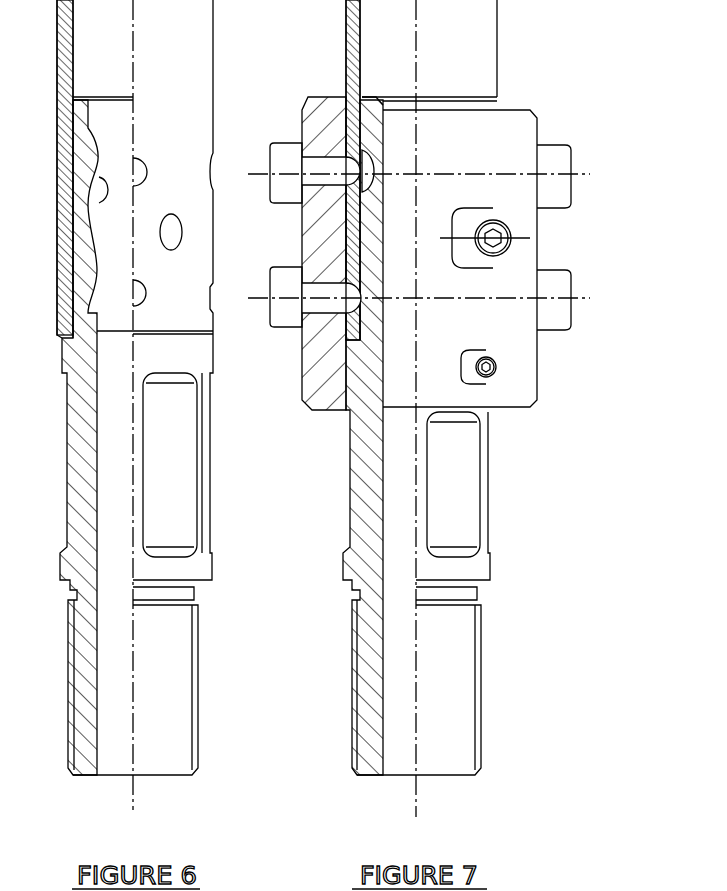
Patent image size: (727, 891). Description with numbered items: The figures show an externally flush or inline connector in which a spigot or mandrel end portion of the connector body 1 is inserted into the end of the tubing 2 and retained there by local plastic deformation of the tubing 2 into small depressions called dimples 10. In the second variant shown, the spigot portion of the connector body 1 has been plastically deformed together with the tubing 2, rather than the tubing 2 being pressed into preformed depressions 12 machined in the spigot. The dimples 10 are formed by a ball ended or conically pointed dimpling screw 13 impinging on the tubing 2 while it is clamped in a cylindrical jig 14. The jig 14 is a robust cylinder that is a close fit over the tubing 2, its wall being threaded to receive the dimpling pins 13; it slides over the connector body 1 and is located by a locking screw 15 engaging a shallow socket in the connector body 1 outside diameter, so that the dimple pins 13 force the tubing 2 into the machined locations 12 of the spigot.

In FIG. 6, the connector body 1 is at (82, 423).
In FIG. 7, the connector body 1 is at (363, 560).
In FIG. 6, the tubing 2 is at (68, 47).
In FIG. 7, the tubing 2 is at (352, 32).
In FIG. 6, the dimples 10 is at (185, 238).
In FIG. 6, the preformed depressions 12 is at (103, 187).
In FIG. 7, the dimpling screw 13 is at (286, 318).
In FIG. 7, the cylindrical jig 14 is at (320, 368).
In FIG. 7, the locking screw 15 is at (464, 374).